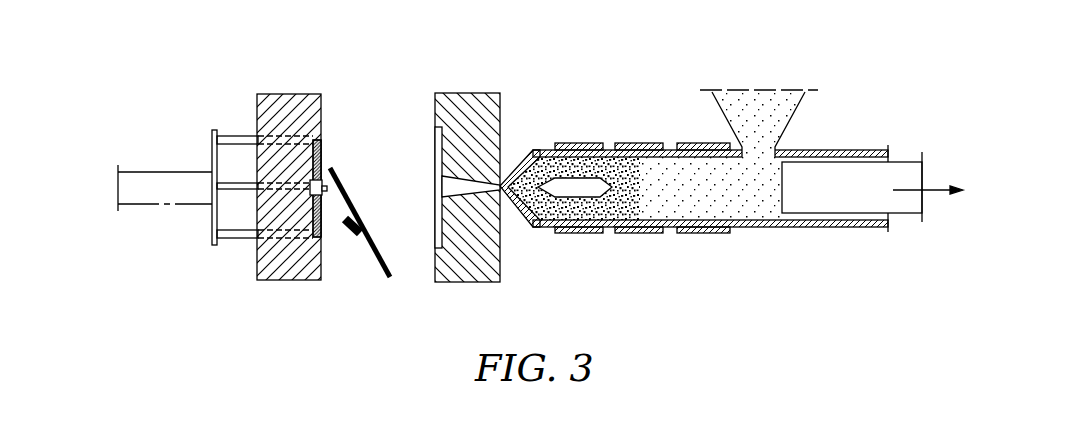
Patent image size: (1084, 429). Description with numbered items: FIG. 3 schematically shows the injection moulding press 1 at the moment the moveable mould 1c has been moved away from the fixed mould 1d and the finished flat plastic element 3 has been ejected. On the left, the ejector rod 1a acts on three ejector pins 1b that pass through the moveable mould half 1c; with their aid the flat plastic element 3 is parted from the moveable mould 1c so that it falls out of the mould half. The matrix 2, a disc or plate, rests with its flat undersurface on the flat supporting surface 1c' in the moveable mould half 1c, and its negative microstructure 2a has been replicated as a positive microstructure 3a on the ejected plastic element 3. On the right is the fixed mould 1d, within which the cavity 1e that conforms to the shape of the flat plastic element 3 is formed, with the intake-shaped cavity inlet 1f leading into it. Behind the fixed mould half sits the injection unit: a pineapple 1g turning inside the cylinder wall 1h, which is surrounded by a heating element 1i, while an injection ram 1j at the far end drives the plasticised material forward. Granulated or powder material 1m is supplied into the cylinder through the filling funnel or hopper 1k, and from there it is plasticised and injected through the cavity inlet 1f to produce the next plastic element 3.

The injection moulding press 1 is at (620, 45).
The ejector rod 1a is at (153, 178).
The ejector pins 1b is at (230, 134).
The moveable mould 1c is at (276, 169).
The flat supporting surface 1c' is at (325, 145).
The fixed mould 1d is at (479, 93).
The mold insert 1e is at (440, 235).
The cavity inlet 1f is at (478, 187).
The pineapple 1g is at (570, 183).
The cylinder wall 1h is at (607, 227).
The heaters 1i is at (655, 235).
The injection ram 1j is at (905, 210).
The filling funnel or hopper 1k is at (798, 108).
The granulated or powder material 1m is at (730, 97).
The matrix 2 is at (331, 144).
The negative microstructure 2a is at (319, 222).
The plastic element 3 is at (380, 208).
The positive microstructure 3a is at (373, 268).